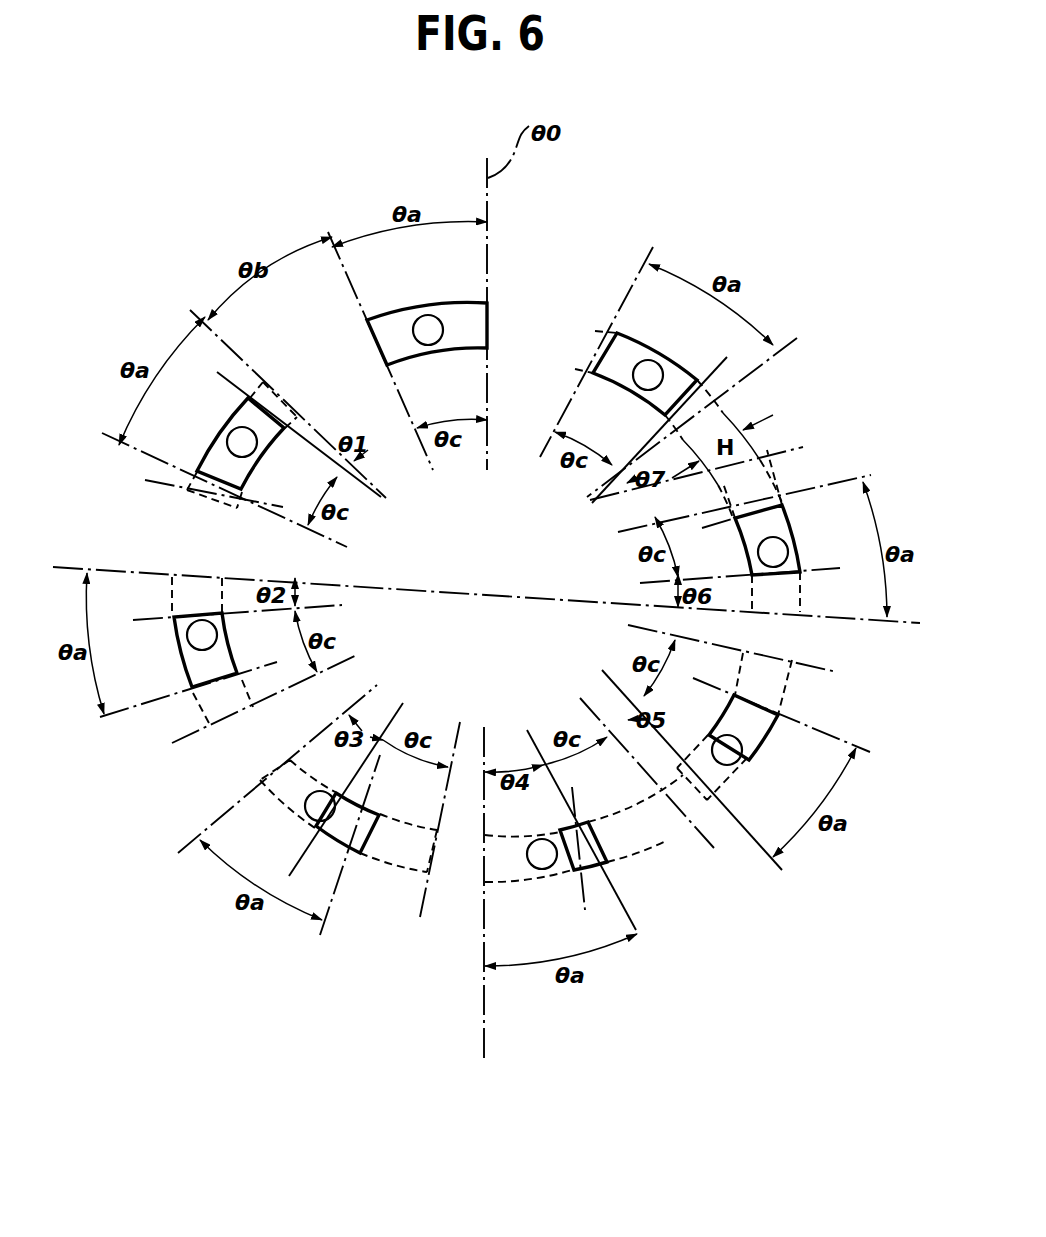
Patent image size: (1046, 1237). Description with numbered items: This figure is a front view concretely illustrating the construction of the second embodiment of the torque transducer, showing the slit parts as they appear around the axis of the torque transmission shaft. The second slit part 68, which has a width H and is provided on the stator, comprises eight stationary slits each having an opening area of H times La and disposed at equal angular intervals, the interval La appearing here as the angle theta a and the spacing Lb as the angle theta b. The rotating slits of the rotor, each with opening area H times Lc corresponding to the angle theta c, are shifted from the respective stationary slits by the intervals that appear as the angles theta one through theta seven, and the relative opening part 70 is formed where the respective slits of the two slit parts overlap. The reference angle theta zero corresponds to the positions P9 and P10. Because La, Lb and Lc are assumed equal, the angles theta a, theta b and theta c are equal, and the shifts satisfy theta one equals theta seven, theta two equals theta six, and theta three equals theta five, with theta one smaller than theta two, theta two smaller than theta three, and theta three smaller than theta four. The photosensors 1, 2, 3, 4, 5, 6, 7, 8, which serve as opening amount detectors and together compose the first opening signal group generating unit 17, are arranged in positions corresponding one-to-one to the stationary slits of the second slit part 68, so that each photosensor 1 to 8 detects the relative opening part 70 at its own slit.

The photosensor 1 is at (428, 315).
The photosensor 2 is at (232, 432).
The photosensor 3 is at (188, 636).
The photosensor 4 is at (305, 818).
The photosensor 5 is at (537, 869).
The photosensor 6 is at (735, 766).
The photosensor 7 is at (788, 552).
The photosensor 8 is at (653, 362).
The first opening signal group generating unit 17 is at (489, 326).
The second slit part 68 is at (486, 595).
The relative opening part 70 is at (380, 351).